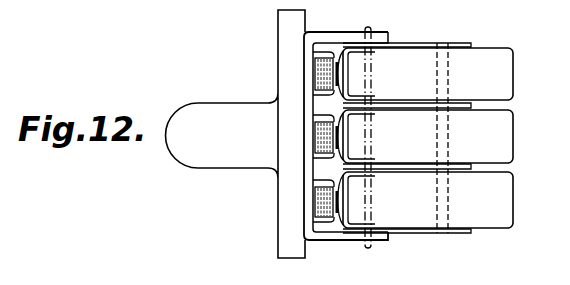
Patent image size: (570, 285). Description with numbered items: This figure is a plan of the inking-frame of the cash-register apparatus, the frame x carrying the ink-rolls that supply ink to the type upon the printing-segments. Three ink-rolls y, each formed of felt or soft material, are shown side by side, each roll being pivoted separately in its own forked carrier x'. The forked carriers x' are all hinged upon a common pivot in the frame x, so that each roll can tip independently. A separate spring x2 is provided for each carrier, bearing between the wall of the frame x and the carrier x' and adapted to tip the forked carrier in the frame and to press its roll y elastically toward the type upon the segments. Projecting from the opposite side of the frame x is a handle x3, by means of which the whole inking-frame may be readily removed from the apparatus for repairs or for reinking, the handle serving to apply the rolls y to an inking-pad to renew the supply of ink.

The inking-frame x is at (346, 152).
The forked carrier x' is at (374, 147).
The spring x2 is at (328, 138).
The handle x3 is at (222, 135).
The ink-roll y is at (368, 23).